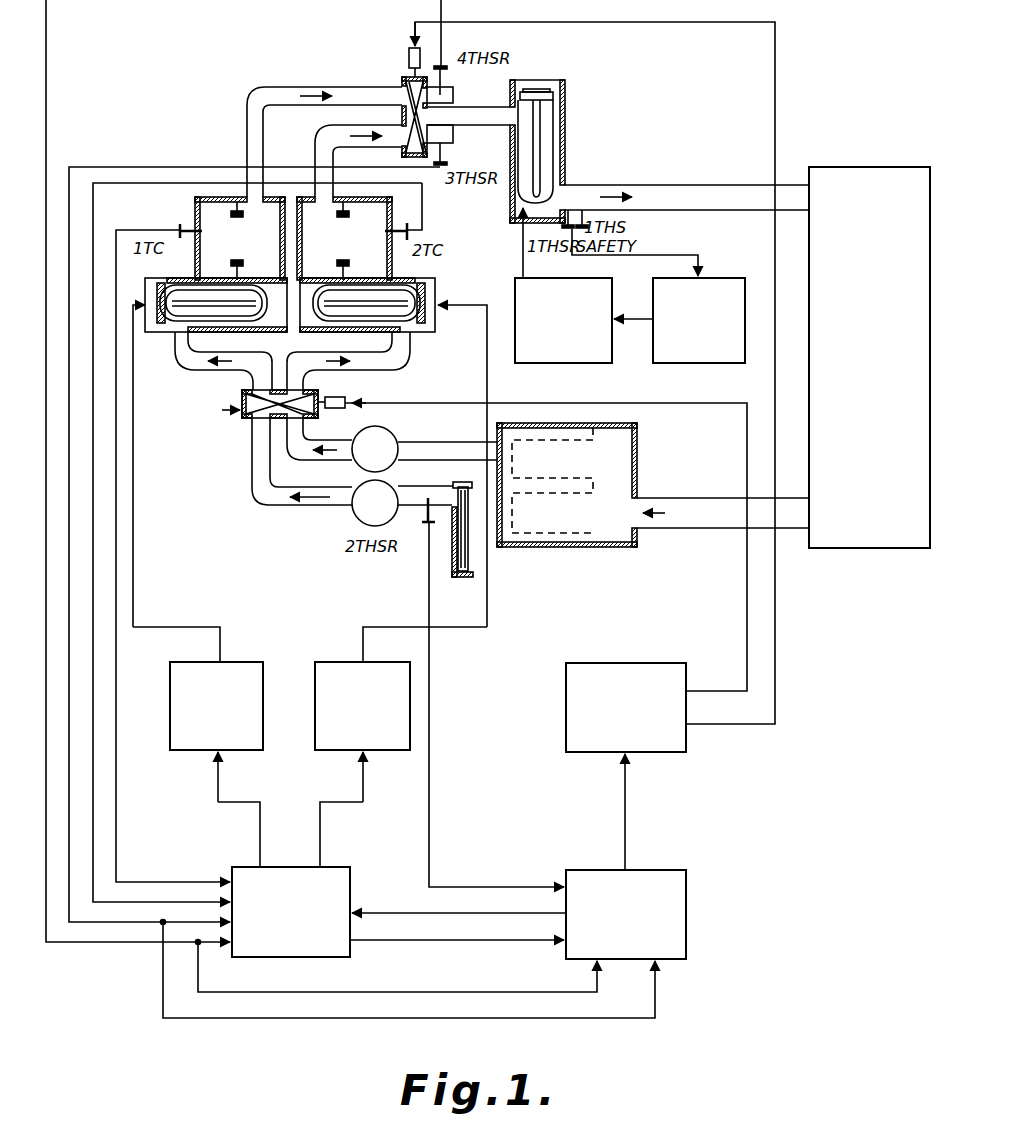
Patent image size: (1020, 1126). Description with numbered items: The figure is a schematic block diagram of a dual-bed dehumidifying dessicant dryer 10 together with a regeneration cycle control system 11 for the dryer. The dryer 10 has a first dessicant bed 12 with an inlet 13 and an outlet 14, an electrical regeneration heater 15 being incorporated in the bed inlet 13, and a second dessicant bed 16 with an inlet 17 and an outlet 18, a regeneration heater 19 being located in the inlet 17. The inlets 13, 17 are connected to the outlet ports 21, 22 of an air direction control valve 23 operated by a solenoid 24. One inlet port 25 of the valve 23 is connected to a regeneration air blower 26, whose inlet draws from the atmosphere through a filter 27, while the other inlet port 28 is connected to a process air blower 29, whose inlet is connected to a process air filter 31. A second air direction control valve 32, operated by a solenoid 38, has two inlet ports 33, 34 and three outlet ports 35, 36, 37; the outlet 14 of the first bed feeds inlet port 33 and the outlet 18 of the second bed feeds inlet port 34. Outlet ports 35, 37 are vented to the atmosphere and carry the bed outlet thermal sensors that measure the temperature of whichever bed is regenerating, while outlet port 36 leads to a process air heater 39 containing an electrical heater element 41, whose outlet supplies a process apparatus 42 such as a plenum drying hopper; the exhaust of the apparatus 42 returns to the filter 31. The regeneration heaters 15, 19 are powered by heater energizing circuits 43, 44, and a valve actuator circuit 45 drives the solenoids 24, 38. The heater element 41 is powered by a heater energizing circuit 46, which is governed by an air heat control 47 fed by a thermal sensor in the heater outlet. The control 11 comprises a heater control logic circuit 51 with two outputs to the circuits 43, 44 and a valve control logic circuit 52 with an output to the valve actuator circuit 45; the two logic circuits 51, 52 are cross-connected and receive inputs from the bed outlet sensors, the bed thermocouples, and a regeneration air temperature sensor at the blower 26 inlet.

The dual-bed dehumidifying dessicant dryer 10 is at (190, 383).
The regeneration cycle control system 11 is at (428, 962).
The first dessicant bed 12 is at (195, 216).
The inlet 13 is at (178, 342).
The outlet 14 is at (247, 190).
The electrical regeneration heater 15 is at (185, 288).
The second dessicant bed 16 is at (390, 222).
The inlet 17 is at (406, 343).
The outlet 18 is at (316, 190).
The regeneration heater 19 is at (412, 303).
The outlet port 21 is at (253, 390).
The outlet port 22 is at (295, 393).
The air direction control valve 23 is at (215, 415).
The solenoid 24 is at (346, 398).
The inlet port 25 is at (258, 419).
The regeneration air blower 26 is at (357, 511).
The filter 27 is at (470, 547).
The inlet port 28 is at (300, 419).
The process air blower 29 is at (389, 430).
The process air filter 31 is at (640, 430).
The second air direction control valve 32 is at (402, 78).
The inlet port 33 is at (402, 86).
The inlet port 34 is at (402, 147).
The outlet port 35 is at (455, 90).
The outlet port 36 is at (458, 109).
The outlet port 37 is at (453, 141).
The solenoid 38 is at (409, 52).
The process air heater 39 is at (565, 146).
The electrical heater element 41 is at (549, 128).
The process apparatus 42 is at (852, 167).
The heater energizing circuit 43 is at (245, 662).
The heater energizing circuit 44 is at (345, 752).
The valve actuator circuit 45 is at (674, 752).
The heater energizing circuit 46 is at (578, 363).
The air heat control circuit 47 is at (712, 363).
The heater control logic circuit 51 is at (232, 869).
The valve control logic circuit 52 is at (688, 875).